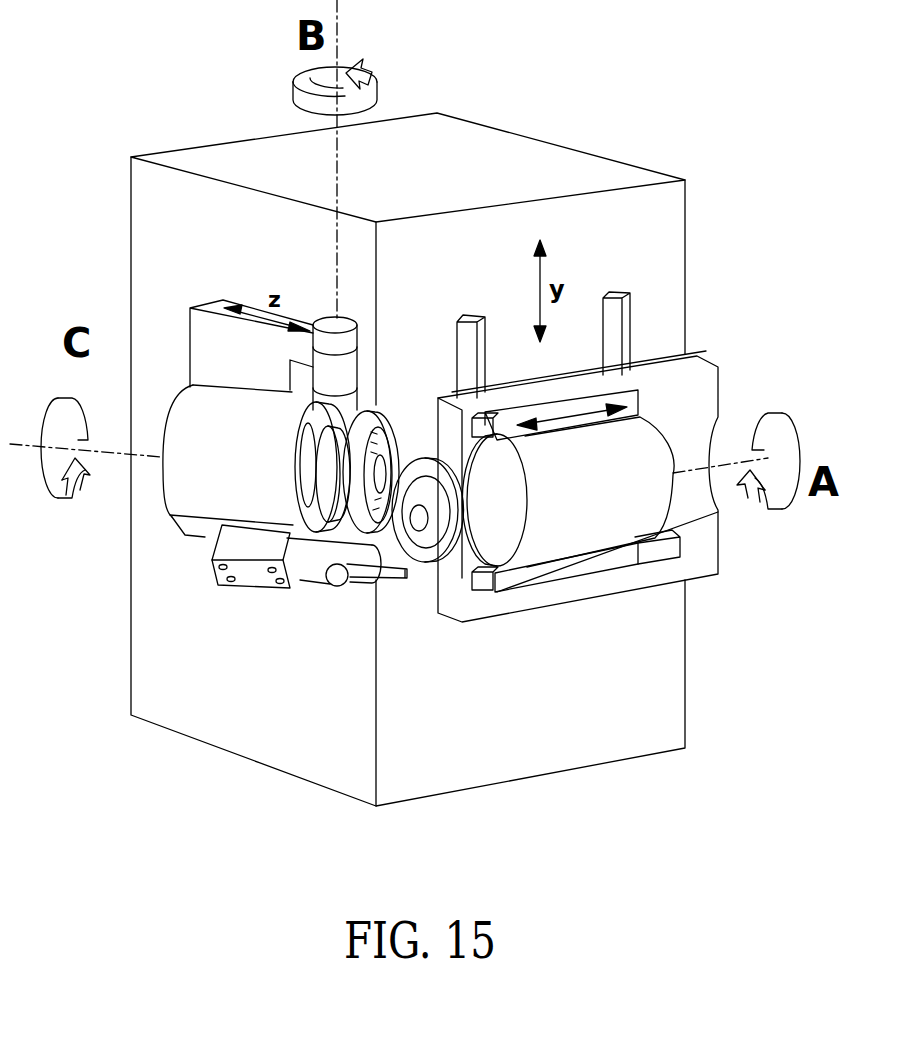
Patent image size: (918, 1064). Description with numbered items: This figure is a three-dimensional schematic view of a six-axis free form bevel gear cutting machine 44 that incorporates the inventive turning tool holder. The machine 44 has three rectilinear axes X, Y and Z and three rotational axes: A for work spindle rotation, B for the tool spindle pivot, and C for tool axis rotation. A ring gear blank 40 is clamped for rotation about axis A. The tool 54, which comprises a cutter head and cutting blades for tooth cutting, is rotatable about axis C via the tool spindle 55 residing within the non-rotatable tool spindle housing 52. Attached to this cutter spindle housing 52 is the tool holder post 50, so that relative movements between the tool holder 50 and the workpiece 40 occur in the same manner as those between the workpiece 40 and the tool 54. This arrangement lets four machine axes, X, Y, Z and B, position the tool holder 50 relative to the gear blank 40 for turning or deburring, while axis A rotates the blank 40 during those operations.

The six-axis CNC bevel gear generating machine 44 is at (567, 143).
The ring gear blank 40 is at (415, 457).
The tool holder 50 is at (336, 590).
The tool spindle housing 52 is at (247, 447).
The tool 54 is at (362, 423).
The tool spindle 55 is at (305, 478).